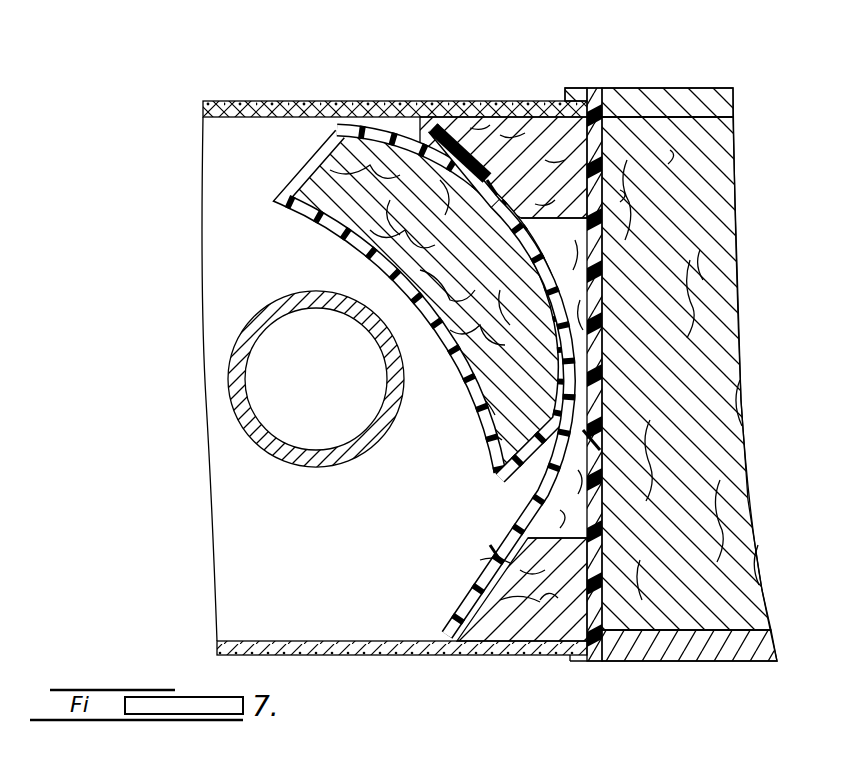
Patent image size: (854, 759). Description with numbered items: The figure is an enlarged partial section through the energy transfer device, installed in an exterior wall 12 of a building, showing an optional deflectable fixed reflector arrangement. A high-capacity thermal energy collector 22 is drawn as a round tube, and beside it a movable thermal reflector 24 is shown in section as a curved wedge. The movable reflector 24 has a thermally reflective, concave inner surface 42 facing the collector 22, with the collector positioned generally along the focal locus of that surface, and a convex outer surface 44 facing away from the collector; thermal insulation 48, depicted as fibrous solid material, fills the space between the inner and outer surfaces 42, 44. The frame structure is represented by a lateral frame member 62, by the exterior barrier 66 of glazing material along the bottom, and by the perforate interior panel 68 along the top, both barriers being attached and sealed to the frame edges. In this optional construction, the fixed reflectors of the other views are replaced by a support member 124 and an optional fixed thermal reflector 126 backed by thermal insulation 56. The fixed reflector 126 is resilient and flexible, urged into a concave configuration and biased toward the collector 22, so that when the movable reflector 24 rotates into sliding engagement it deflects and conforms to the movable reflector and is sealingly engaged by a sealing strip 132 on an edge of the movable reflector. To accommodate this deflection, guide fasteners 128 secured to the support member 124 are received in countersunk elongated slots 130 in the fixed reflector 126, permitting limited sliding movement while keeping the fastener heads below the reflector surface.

The exterior wall 12 is at (637, 365).
The thermal energy collector 22 is at (237, 429).
The movable thermal reflector 24 is at (398, 264).
The concave inner surface 42 is at (317, 203).
The convex outer surface 44 is at (353, 133).
The thermal insulation 48 is at (413, 237).
The thermal insulation 56 is at (580, 478).
The lateral frame member 62 is at (590, 552).
The exterior barrier 66 is at (387, 653).
The perforate interior panel 68 is at (297, 103).
The support member 124 is at (637, 388).
The optional fixed thermal reflector 126 is at (587, 470).
The guide fastener 128 is at (487, 180).
The elongated slot 130 is at (503, 207).
The sealing strip 132 is at (583, 444).